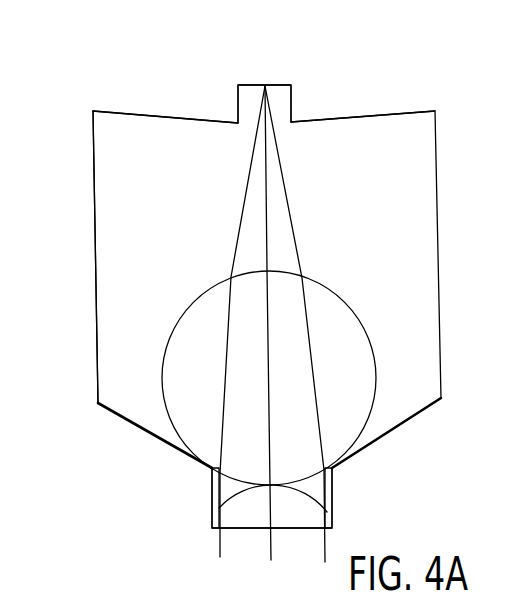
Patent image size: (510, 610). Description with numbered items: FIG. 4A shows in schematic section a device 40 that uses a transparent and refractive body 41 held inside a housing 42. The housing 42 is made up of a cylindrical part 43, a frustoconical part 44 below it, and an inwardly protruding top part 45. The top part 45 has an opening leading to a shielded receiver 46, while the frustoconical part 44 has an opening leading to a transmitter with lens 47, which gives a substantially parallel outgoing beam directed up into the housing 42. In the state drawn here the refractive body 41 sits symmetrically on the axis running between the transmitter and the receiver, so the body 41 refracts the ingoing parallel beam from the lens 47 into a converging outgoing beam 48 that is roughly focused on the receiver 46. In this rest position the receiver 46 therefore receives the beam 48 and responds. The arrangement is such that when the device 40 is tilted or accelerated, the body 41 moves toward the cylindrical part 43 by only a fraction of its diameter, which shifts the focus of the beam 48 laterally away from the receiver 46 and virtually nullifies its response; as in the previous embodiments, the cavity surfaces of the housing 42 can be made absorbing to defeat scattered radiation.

The device 40 is at (457, 37).
The transparent and refractive body 41 is at (348, 366).
The housing 42 is at (88, 367).
The cylindrical part 43 is at (93, 213).
The frustoconical part 44 is at (163, 445).
The inwardly protruding top part 45 is at (350, 121).
The shielded receiver 46 is at (287, 84).
The transmitter with lens 47 is at (310, 519).
The converging outgoing beam 48 is at (275, 217).